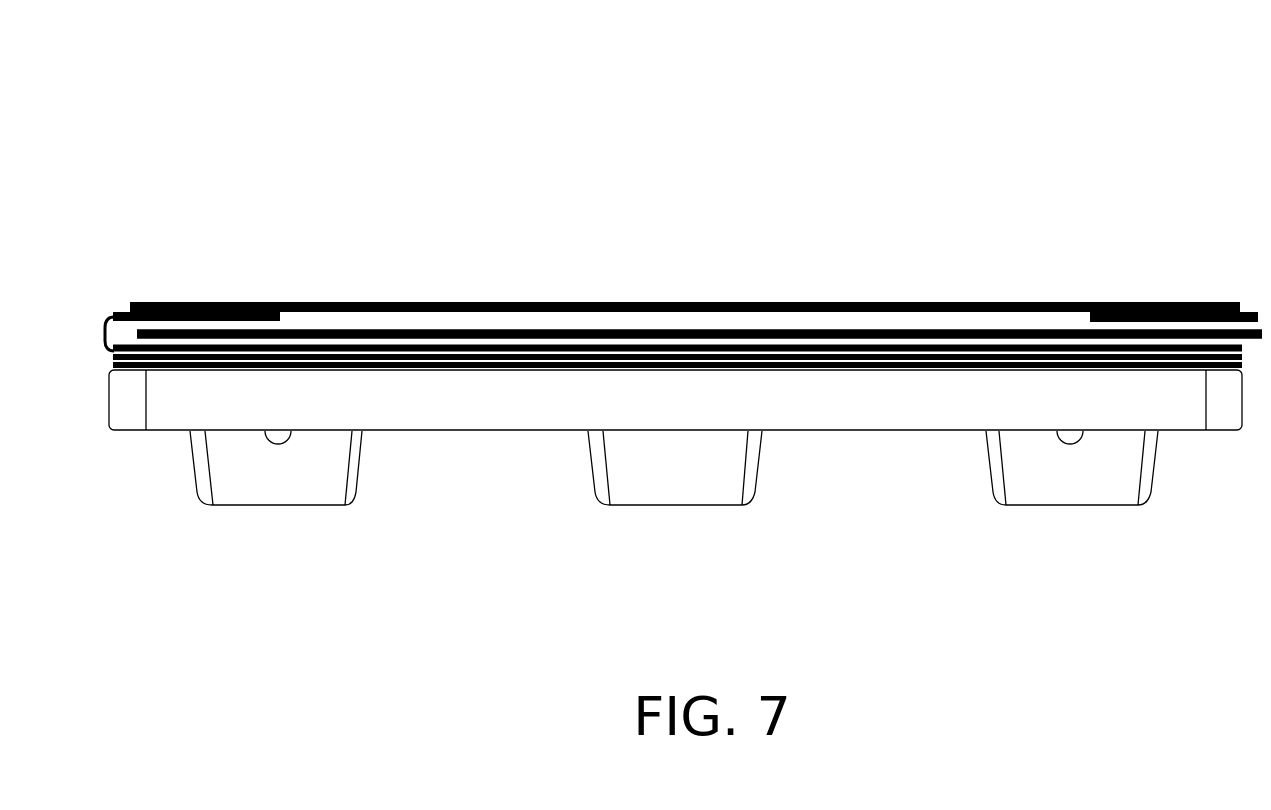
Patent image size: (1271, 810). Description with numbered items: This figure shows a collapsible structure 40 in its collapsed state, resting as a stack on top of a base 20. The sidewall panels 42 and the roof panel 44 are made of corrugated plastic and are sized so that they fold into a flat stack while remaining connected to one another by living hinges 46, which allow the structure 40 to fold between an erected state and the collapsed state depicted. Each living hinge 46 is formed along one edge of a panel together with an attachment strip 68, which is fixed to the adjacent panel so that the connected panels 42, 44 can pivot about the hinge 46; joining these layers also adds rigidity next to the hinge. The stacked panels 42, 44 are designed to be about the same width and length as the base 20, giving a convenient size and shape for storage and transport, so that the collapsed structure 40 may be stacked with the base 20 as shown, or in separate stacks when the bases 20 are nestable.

The collapsible structure 40 is at (283, 97).
The sidewall panels 42 is at (681, 346).
The roof panel 44 is at (365, 368).
The living hinges 46 is at (112, 320).
The attachment strip 68 is at (215, 310).
The base 20 is at (445, 406).